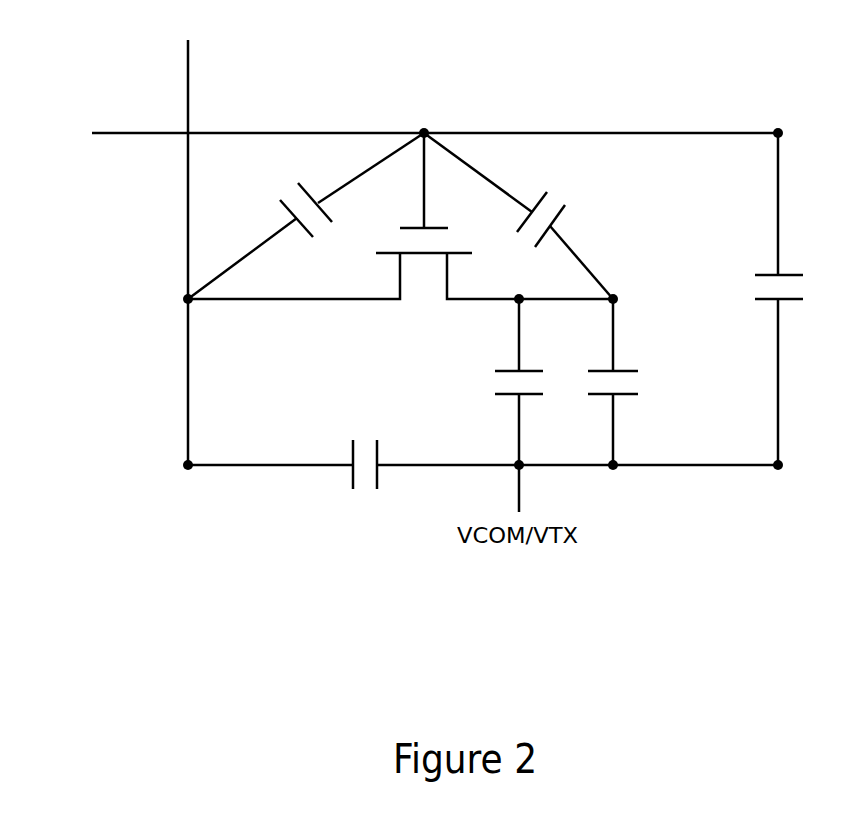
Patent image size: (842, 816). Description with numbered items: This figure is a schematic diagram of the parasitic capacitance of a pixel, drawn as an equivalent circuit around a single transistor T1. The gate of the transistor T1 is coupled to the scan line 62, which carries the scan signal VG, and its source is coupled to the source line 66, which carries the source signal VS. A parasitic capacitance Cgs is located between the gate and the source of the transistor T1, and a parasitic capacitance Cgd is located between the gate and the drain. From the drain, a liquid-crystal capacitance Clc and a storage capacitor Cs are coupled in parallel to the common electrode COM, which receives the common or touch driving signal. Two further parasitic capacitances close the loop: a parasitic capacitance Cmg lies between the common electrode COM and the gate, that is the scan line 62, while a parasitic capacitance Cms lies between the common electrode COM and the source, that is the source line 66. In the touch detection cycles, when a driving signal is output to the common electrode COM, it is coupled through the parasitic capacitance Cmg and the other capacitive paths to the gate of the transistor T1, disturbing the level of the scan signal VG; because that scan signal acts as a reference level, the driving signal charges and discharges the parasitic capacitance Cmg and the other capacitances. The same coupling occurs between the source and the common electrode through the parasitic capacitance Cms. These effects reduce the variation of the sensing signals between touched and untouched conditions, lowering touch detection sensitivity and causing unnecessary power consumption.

The scan line 62 is at (408, 121).
The source line 66 is at (198, 237).
The transistor T1 is at (400, 227).
The parasitic capacitance Cgs is at (306, 216).
The parasitic capacitance Cgd is at (518, 216).
The liquid-crystal capacitance Clc is at (492, 405).
The storage capacitor Cs is at (634, 382).
The parasitic capacitance Cms is at (483, 451).
The parasitic capacitance Cmg is at (753, 299).